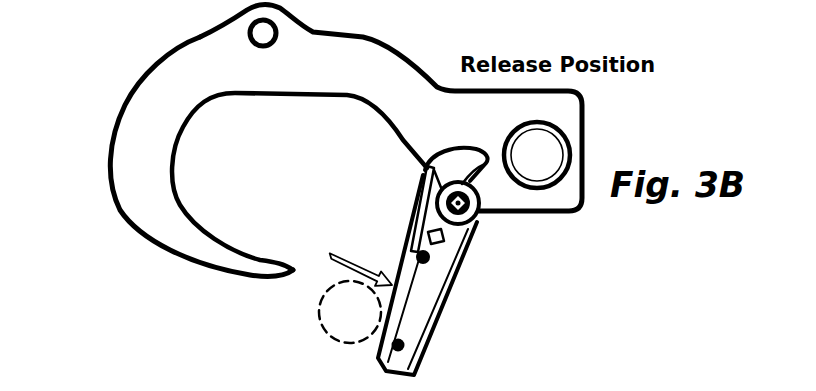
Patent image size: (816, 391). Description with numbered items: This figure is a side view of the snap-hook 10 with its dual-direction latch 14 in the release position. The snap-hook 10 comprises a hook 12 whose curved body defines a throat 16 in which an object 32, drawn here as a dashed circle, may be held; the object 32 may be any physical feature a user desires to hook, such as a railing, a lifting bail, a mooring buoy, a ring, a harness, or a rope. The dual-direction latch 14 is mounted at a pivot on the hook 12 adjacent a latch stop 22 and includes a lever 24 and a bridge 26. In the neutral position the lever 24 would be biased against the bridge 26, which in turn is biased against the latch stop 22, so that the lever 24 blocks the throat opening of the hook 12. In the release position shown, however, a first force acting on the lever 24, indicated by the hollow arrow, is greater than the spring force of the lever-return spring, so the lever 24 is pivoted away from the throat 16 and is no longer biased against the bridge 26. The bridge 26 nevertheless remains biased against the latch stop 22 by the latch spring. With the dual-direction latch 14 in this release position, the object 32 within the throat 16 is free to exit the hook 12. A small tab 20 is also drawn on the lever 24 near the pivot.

The snap-hook 10 is at (90, 51).
The hook 12 is at (110, 133).
The dual-direction latch 14 is at (490, 263).
The throat 16 is at (270, 190).
The tab 20 is at (403, 258).
The latch stop 22 is at (423, 163).
The lever 24 is at (437, 327).
The bridge 26 is at (423, 180).
The object 32 is at (364, 326).